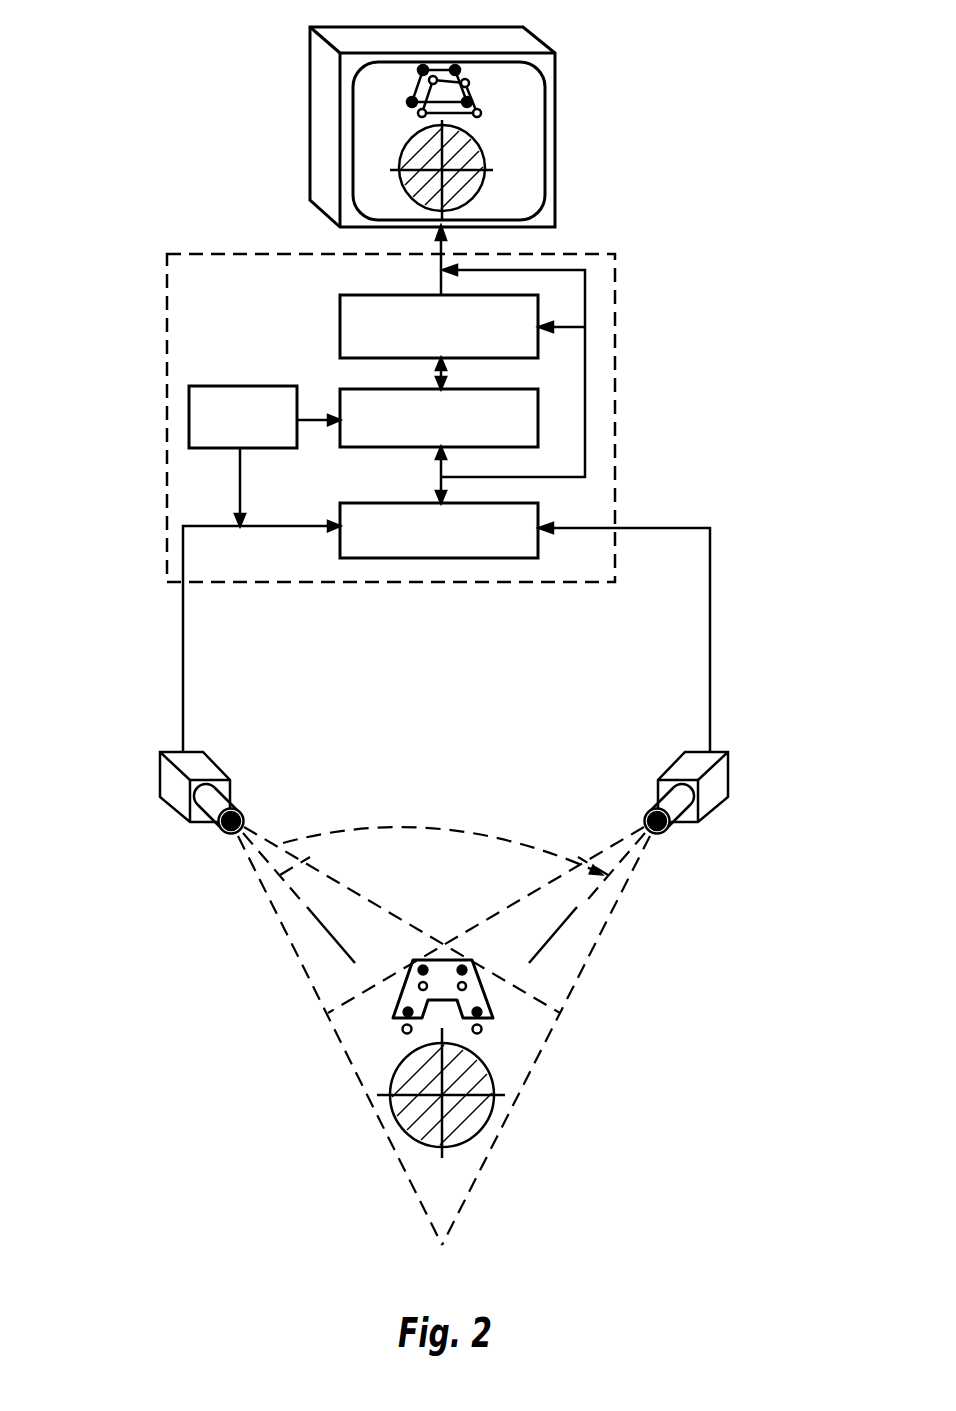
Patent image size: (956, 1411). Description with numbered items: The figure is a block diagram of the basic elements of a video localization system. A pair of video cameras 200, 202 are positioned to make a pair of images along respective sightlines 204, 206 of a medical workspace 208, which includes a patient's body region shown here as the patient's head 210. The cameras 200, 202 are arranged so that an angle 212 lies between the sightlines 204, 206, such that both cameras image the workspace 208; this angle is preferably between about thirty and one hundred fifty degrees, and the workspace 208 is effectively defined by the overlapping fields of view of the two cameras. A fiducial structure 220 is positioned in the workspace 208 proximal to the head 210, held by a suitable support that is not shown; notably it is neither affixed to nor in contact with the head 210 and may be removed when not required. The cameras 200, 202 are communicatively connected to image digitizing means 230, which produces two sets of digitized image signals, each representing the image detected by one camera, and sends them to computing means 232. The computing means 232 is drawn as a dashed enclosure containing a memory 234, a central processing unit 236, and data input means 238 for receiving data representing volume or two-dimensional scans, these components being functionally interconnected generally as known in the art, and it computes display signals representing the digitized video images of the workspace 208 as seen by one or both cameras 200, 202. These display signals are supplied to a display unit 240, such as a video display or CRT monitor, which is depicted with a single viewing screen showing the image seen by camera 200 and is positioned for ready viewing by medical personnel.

The video camera 200 is at (173, 803).
The video camera 202 is at (732, 772).
The sightline 204 is at (313, 915).
The sightline 206 is at (575, 908).
The medical workspace 208 is at (518, 1036).
The patient's head 210 is at (405, 1145).
The angle 212 is at (423, 828).
The fiducial structure 220 is at (397, 997).
The image digitizing means 230 is at (540, 510).
The computing means 232 is at (615, 433).
The memory 234 is at (540, 407).
The CPU 236 is at (507, 296).
The data input means 238 is at (189, 408).
The display unit 240 is at (540, 44).